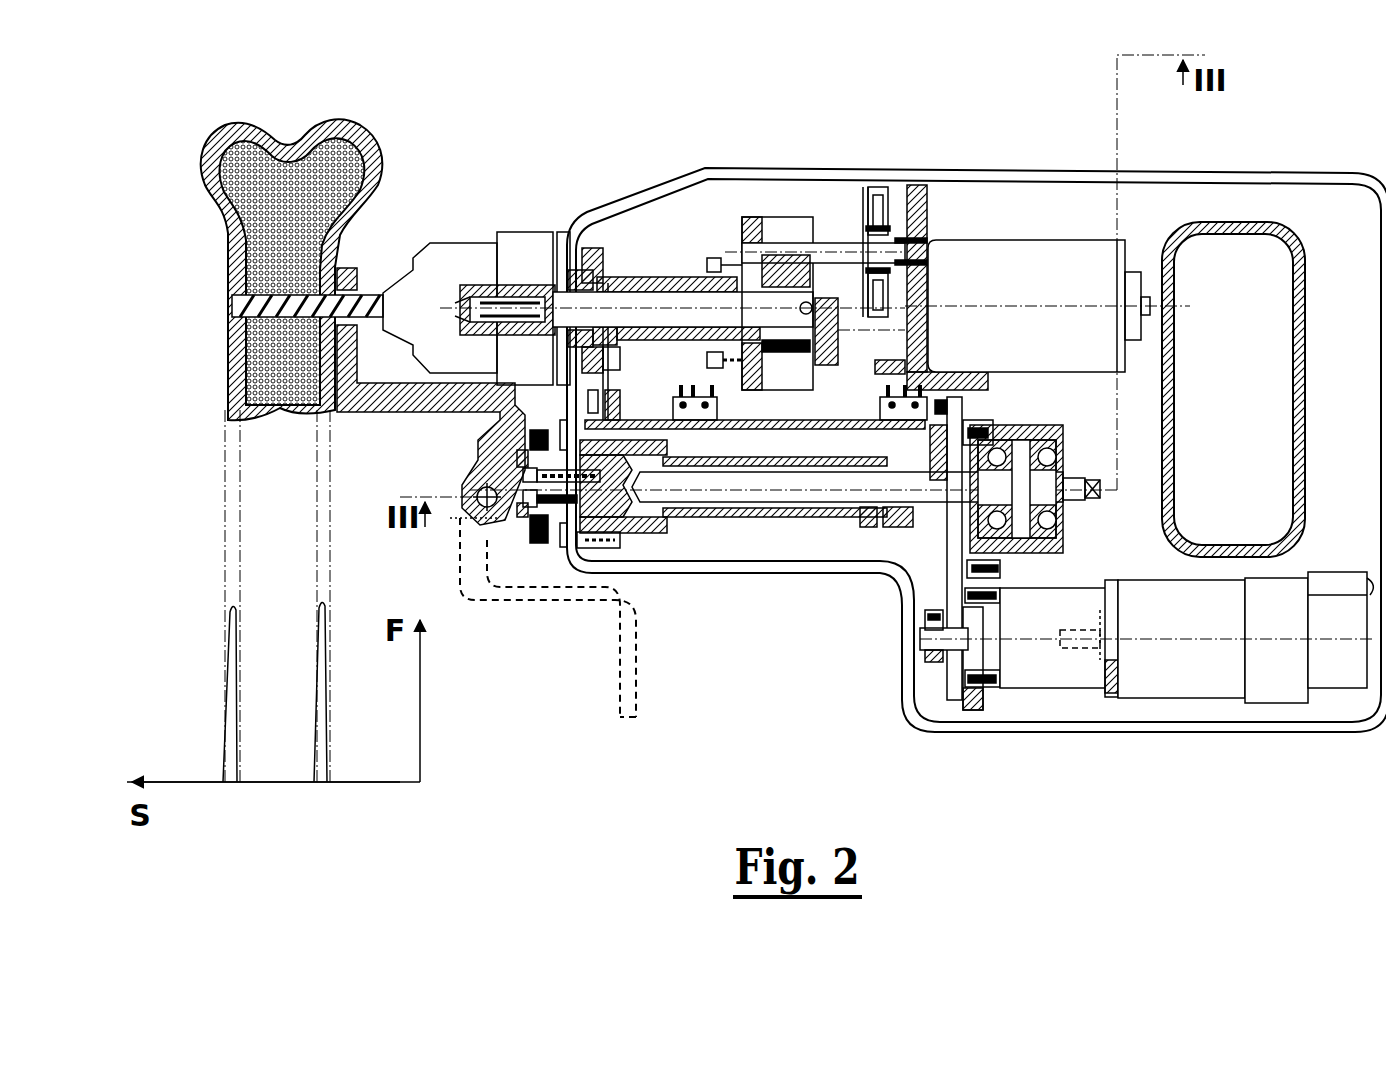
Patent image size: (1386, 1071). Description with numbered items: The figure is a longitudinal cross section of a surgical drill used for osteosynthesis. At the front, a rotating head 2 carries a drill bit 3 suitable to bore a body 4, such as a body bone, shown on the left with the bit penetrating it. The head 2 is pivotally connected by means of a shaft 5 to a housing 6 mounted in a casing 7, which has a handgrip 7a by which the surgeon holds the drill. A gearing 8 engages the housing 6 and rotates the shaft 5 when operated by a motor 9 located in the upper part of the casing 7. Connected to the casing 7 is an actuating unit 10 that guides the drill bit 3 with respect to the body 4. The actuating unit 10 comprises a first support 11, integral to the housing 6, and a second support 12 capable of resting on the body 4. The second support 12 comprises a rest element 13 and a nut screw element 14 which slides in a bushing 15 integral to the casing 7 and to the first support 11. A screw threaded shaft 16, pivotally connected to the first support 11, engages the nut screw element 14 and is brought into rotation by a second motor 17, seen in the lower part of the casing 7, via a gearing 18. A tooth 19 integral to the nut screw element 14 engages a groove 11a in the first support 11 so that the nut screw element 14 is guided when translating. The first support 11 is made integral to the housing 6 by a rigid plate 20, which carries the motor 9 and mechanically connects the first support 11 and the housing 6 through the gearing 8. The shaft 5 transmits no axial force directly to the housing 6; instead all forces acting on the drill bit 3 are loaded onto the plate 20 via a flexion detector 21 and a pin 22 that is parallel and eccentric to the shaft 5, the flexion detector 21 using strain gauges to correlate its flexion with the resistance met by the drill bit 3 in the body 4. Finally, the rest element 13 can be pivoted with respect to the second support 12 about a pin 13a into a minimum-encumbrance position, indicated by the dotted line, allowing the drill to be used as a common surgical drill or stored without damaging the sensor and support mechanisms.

The rotating head 2 is at (450, 256).
The drill bit 3 is at (366, 292).
The body 4 is at (378, 192).
The shaft 5 is at (600, 303).
The housing 6 is at (667, 277).
The casing 7 is at (1290, 173).
The handgrip 7a is at (1175, 470).
The gearing 8 is at (806, 212).
The motor 9 is at (1085, 262).
The actuating unit 10 is at (779, 582).
The first support 11 is at (916, 560).
The groove 11a is at (672, 492).
The second support 12 is at (538, 570).
The rest element 13 is at (380, 405).
The pin 13a is at (482, 492).
The nut screw element 14 is at (866, 505).
The bushing 15 is at (640, 525).
The screw threaded shaft 16 is at (690, 538).
The motor 17 is at (1165, 668).
The gearing 18 is at (928, 688).
The tooth 19 is at (830, 435).
The rigid plate 20 is at (897, 262).
The flexion detector 21 is at (918, 300).
The pin 22 is at (930, 330).